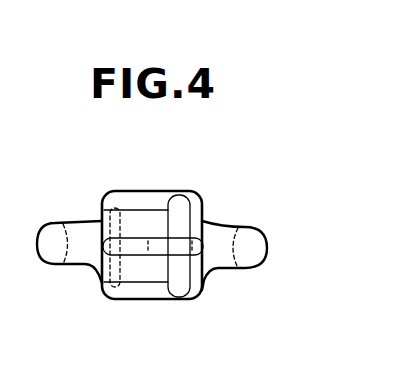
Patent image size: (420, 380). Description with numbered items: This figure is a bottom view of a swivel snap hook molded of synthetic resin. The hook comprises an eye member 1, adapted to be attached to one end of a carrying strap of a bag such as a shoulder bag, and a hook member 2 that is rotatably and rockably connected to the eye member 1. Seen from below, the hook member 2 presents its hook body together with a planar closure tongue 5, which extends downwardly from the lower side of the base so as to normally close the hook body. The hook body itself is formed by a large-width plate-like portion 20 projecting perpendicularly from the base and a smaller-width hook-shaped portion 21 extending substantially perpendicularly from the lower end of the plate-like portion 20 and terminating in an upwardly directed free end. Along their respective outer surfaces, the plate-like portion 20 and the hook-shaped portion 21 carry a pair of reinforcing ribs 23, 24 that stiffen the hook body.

The eye member 1 is at (245, 220).
The hook member 2 is at (152, 190).
The closure tongue 5 is at (100, 271).
The plate-like portion 20 is at (176, 291).
The hook-shaped portion 21 is at (130, 281).
The reinforcing rib 23 is at (200, 246).
The reinforcing rib 24 is at (153, 250).